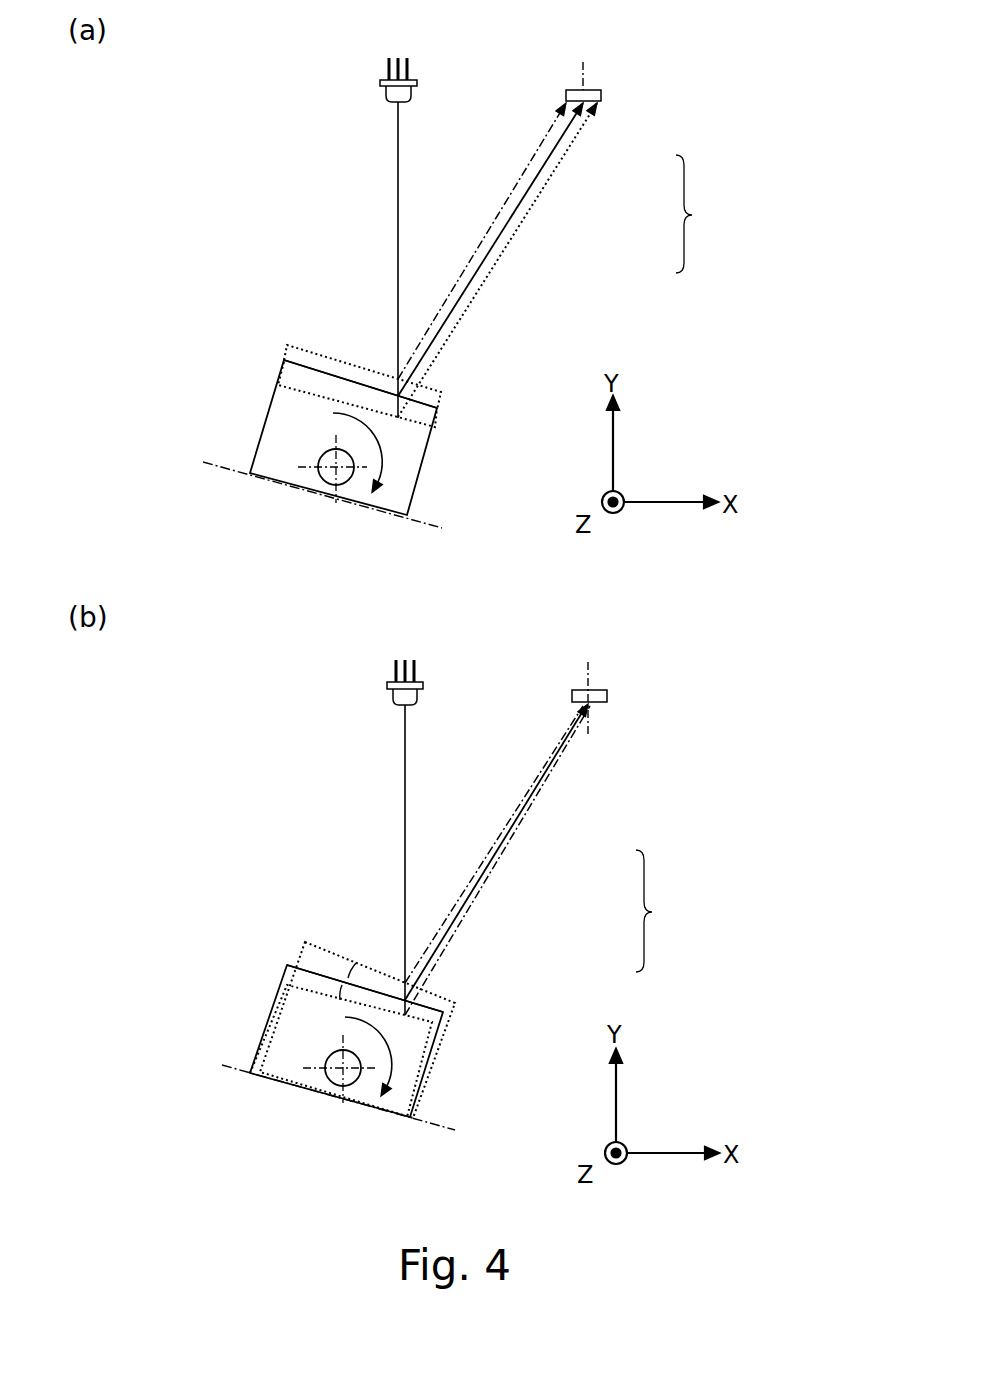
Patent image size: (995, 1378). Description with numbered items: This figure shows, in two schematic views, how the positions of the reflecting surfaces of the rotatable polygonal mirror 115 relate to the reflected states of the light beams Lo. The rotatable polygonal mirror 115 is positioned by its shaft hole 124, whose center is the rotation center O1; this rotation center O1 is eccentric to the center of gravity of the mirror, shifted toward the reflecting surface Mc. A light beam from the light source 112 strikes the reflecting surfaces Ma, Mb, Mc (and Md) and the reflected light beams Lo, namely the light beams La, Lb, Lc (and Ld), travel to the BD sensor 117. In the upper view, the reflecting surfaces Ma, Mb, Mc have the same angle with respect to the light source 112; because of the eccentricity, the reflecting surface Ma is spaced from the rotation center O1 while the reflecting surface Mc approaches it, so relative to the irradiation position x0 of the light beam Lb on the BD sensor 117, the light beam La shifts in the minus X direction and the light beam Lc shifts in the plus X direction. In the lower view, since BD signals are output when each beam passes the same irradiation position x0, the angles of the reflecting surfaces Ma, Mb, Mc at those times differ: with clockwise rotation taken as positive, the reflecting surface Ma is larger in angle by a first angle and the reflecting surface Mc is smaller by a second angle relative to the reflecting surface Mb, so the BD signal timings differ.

The light source 112 is at (413, 66).
The rotatable polygonal mirror 115 is at (287, 447).
The BD sensor 117 is at (600, 90).
The shaft hole 124 is at (317, 470).
The irradiation position x0 is at (586, 384).
The light beam La is at (535, 162).
The light beam Lb is at (523, 205).
The light beam Lc is at (510, 243).
The light beams Lo is at (678, 563).
The reflecting surface Ma is at (333, 360).
The reflecting surface Mb is at (312, 368).
The reflecting surface Mc is at (302, 392).
The rotation center O1 is at (305, 1190).